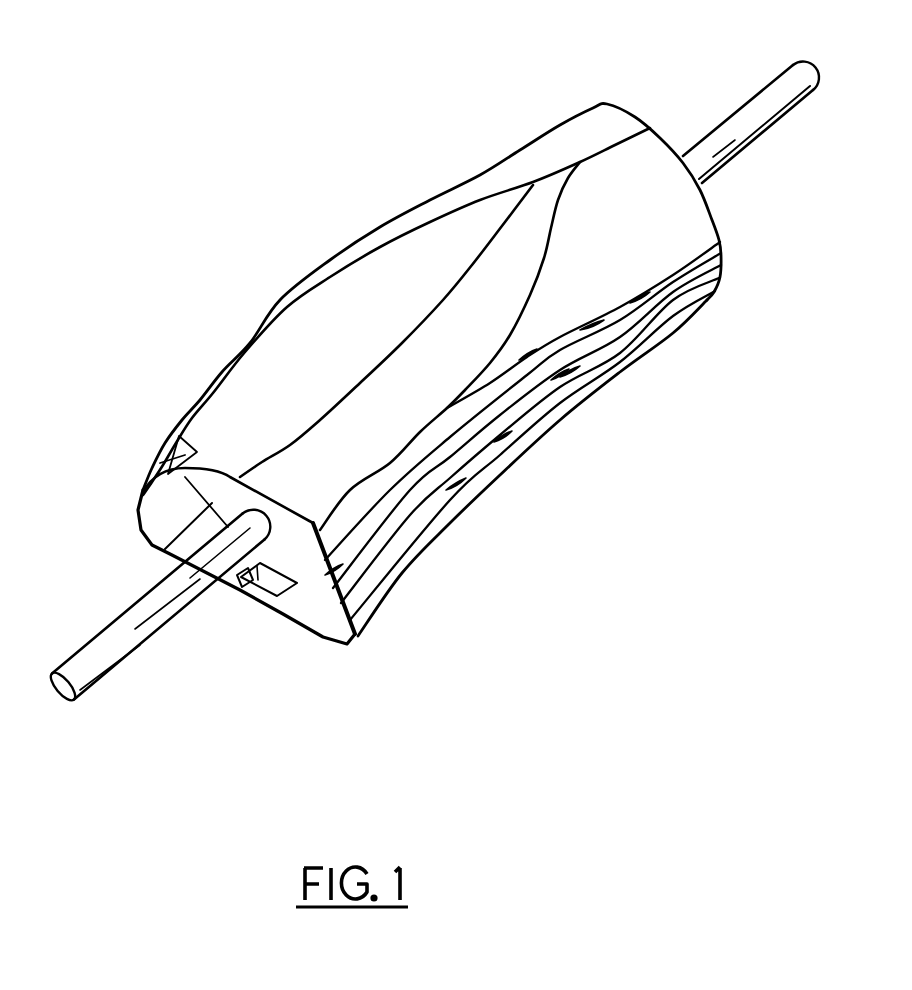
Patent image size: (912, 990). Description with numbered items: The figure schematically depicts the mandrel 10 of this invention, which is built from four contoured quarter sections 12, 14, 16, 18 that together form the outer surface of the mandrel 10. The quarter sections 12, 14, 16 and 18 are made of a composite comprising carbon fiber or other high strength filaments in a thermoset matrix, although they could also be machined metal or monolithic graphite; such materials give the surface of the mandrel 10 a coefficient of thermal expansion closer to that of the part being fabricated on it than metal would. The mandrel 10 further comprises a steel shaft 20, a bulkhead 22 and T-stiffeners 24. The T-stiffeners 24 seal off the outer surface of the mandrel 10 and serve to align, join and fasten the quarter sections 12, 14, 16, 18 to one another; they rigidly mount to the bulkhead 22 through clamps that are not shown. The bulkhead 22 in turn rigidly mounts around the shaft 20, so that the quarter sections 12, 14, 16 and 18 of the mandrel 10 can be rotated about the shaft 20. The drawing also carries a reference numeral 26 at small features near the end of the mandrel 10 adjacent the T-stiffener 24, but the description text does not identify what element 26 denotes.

The mandrel 10 is at (328, 104).
The quarter section 12 is at (343, 328).
The quarter section 14 is at (593, 267).
The quarter section 16 is at (402, 573).
The quarter section 18 is at (163, 512).
The steel shaft 20 is at (742, 103).
The bulkhead 22 is at (219, 491).
The T-stiffener 24 is at (178, 447).
The slot 26 is at (168, 463).